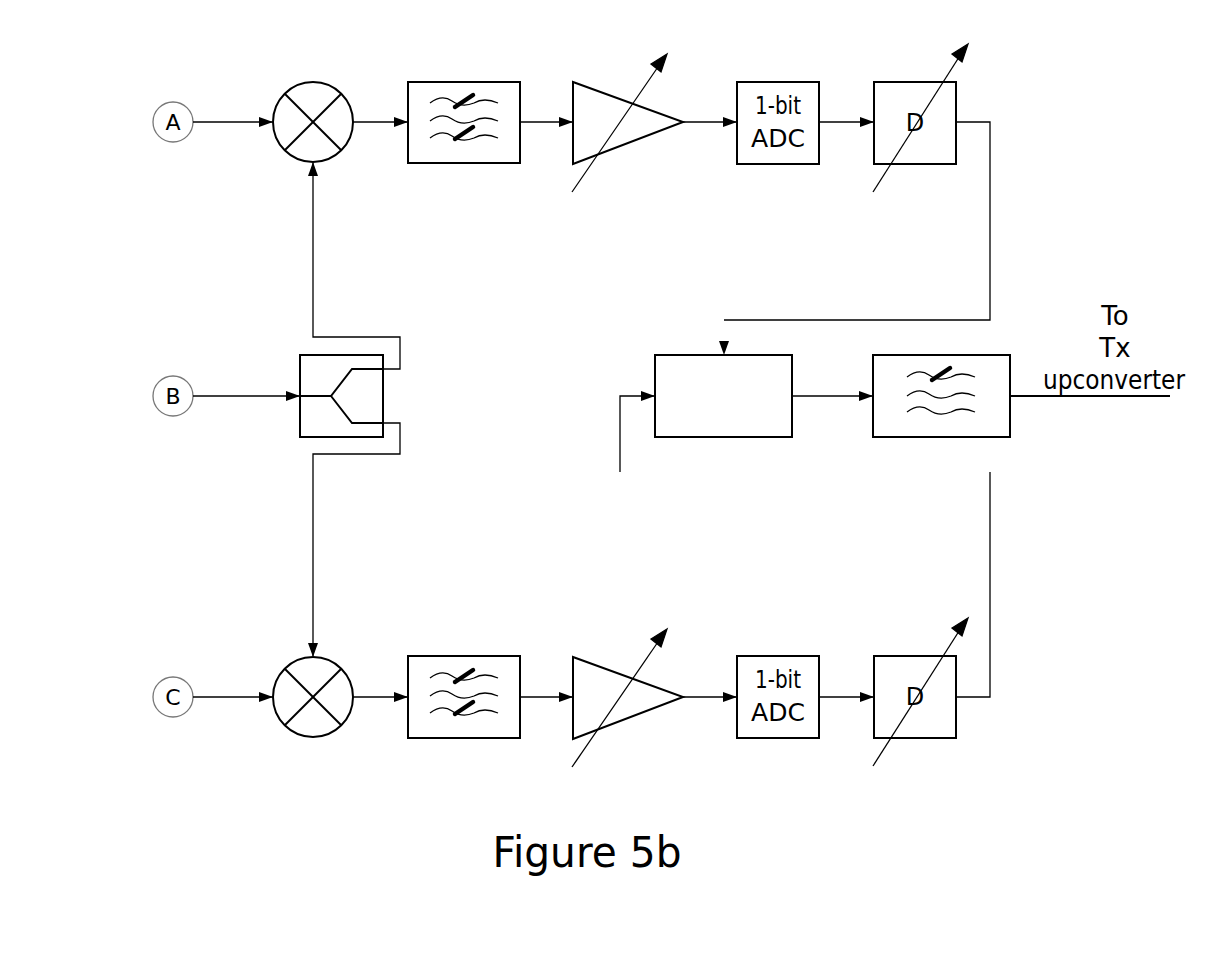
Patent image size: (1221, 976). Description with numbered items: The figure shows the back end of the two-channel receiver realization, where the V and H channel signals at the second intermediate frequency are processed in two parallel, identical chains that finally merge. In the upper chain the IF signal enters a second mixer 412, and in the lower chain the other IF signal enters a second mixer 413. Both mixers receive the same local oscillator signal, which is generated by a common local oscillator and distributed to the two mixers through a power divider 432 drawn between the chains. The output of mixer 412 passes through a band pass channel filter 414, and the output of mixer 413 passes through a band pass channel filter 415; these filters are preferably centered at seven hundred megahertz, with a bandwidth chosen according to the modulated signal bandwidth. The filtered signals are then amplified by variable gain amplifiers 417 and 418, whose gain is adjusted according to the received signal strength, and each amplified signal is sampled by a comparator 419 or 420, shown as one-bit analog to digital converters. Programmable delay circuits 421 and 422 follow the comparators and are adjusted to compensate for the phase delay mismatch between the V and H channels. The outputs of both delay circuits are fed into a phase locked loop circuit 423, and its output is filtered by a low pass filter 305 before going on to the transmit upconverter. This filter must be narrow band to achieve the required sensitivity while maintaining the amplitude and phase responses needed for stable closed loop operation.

The low pass filter 305 is at (941, 382).
The second mixer 412 is at (313, 92).
The second mixer 413 is at (313, 723).
The band pass channel filter 414 is at (464, 93).
The band pass channel filter 415 is at (464, 722).
The variable gain amplifier 417 is at (627, 107).
The variable gain amplifier 418 is at (627, 708).
The comparator 419 is at (778, 93).
The comparator 420 is at (778, 722).
The programmable delay circuit 421 is at (920, 101).
The programmable delay circuit 422 is at (920, 707).
The phase locked loop circuit 423 is at (723, 429).
The power divider 432 is at (350, 409).